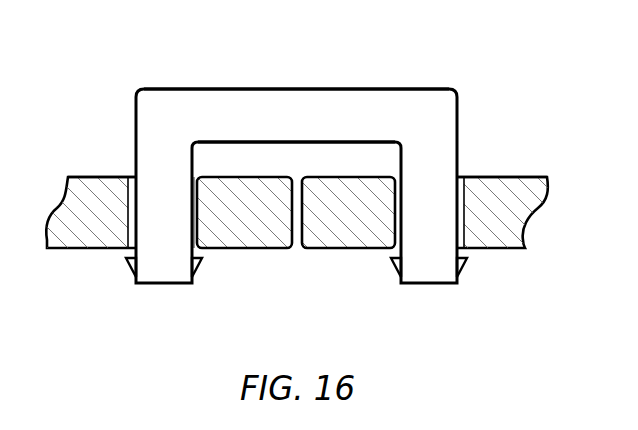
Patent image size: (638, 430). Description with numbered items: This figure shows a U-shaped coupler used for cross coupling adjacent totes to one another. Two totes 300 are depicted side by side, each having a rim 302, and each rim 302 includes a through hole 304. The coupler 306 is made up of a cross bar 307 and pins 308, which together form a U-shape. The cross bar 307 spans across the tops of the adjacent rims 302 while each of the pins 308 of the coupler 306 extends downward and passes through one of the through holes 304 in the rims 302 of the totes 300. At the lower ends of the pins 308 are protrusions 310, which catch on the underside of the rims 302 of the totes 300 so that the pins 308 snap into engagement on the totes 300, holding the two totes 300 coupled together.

The tote 300 is at (94, 161).
The rim 302 is at (95, 241).
The through hole 304 is at (196, 243).
The coupler 306 is at (206, 58).
The cross bar 307 is at (316, 117).
The pin 308 is at (183, 211).
The protrusion 310 is at (197, 259).